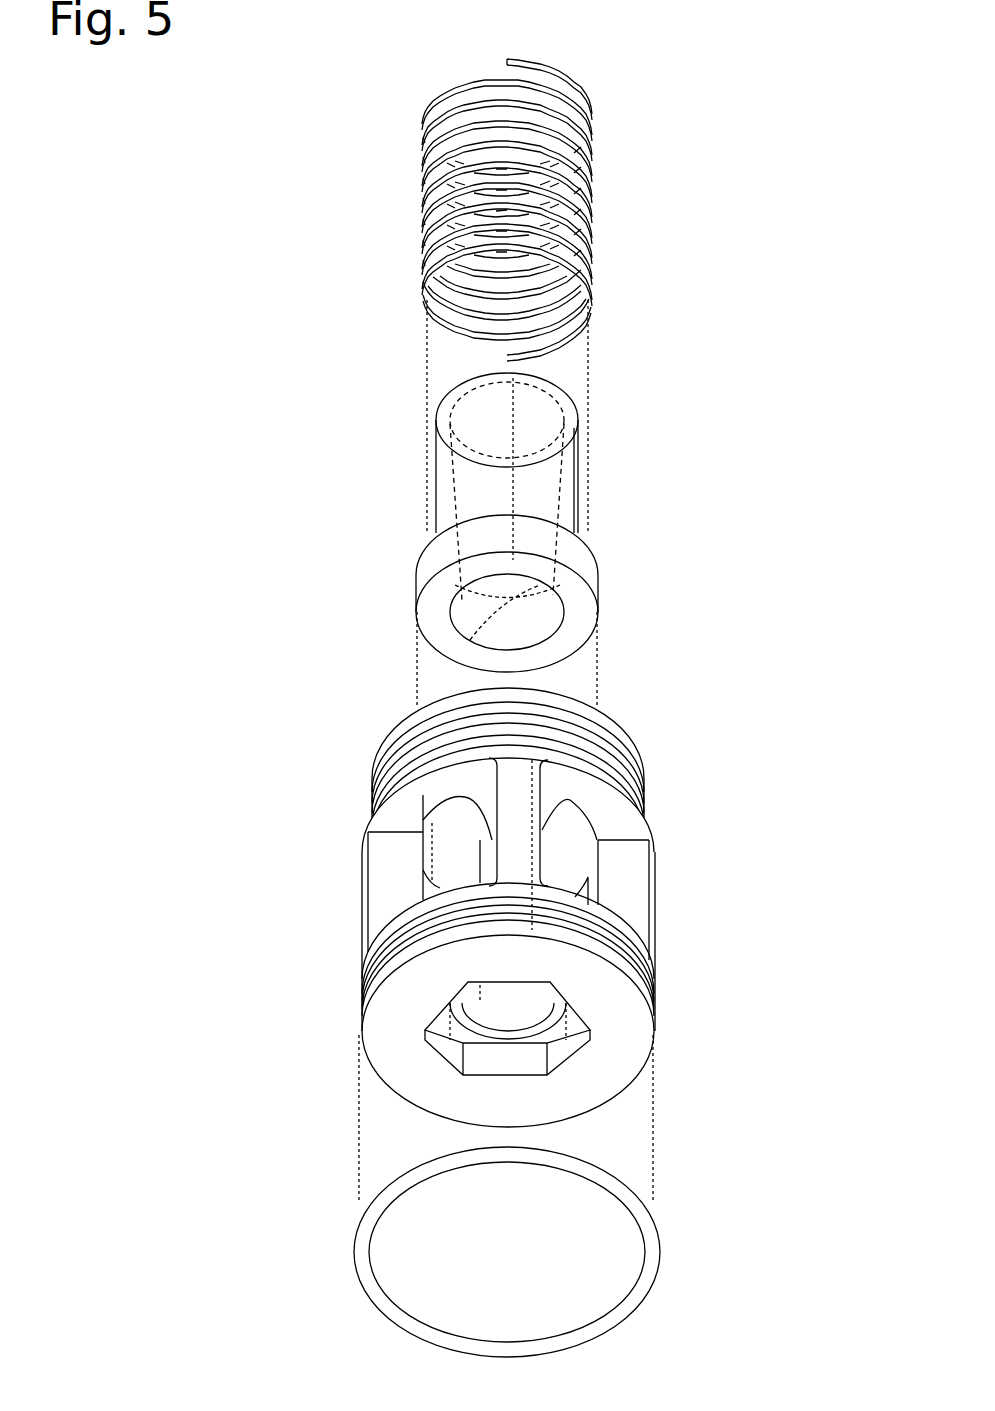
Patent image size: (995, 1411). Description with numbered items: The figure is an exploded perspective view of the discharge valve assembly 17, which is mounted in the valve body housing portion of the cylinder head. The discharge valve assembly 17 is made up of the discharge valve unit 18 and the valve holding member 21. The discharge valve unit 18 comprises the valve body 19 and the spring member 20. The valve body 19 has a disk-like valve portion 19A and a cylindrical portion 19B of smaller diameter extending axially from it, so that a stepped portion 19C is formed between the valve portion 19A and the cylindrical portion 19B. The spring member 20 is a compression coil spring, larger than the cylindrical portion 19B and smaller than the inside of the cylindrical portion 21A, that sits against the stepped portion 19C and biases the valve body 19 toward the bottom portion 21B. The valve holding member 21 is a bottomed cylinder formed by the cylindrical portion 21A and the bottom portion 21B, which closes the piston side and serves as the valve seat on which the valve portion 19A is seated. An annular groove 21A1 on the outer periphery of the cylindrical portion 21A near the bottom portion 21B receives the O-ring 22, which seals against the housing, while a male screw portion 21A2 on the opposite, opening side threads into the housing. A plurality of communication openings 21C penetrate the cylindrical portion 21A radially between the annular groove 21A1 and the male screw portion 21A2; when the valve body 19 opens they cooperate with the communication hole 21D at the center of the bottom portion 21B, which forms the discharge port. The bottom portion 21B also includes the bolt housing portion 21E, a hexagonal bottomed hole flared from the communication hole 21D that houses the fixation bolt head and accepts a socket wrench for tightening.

The discharge valve assembly 17 is at (360, 658).
The discharge valve unit 18 is at (600, 361).
The valve body 19 is at (567, 478).
The valve portion 19A is at (585, 568).
The cylindrical portion 19B is at (462, 470).
The stepped portion 19C is at (437, 548).
The spring member 20 is at (425, 195).
The valve holding member 21 is at (348, 892).
The cylindrical portion 21A is at (360, 930).
The annular groove 21A1 is at (598, 960).
The male screw portion 21A2 is at (395, 757).
The bottom portion 21B is at (400, 1032).
The communication openings 21C is at (390, 856).
The communication hole 21D is at (545, 1020).
The bolt housing portion 21E is at (445, 1033).
The O-ring 22 is at (657, 1250).